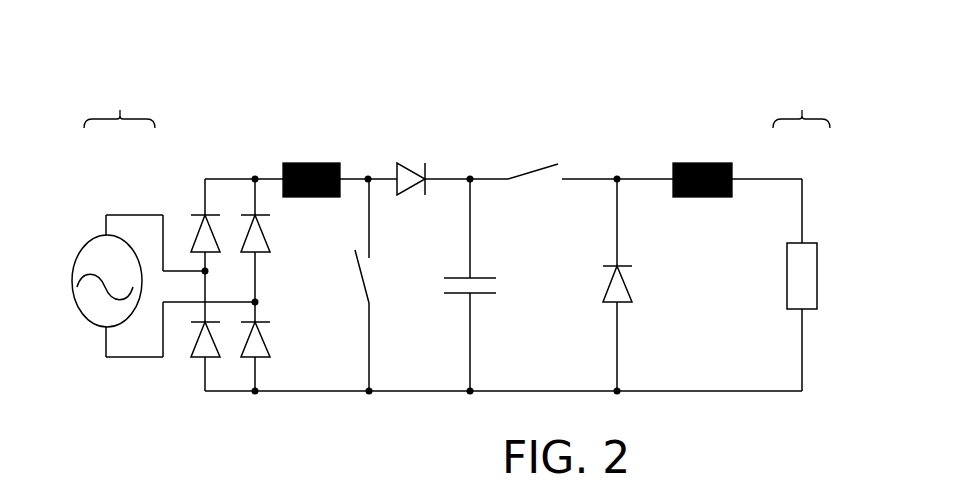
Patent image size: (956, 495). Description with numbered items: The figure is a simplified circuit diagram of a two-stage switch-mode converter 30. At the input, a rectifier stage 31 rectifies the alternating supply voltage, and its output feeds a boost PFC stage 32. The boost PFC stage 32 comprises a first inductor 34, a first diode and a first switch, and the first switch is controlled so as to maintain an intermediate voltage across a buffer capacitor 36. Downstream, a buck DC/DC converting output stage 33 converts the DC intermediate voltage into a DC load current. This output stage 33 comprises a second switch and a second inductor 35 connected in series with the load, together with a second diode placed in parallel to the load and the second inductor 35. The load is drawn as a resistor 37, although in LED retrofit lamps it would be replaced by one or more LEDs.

The switch-mode converter 30 is at (150, 54).
The rectifier stage 31 is at (270, 128).
The boost PFC stage 32 is at (433, 128).
The buck DC/DC converting output stage 33 is at (760, 128).
The first inductor 34 is at (311, 194).
The second inductor 35 is at (702, 194).
The buffer capacitor 36 is at (478, 287).
The resistor 37 is at (819, 285).